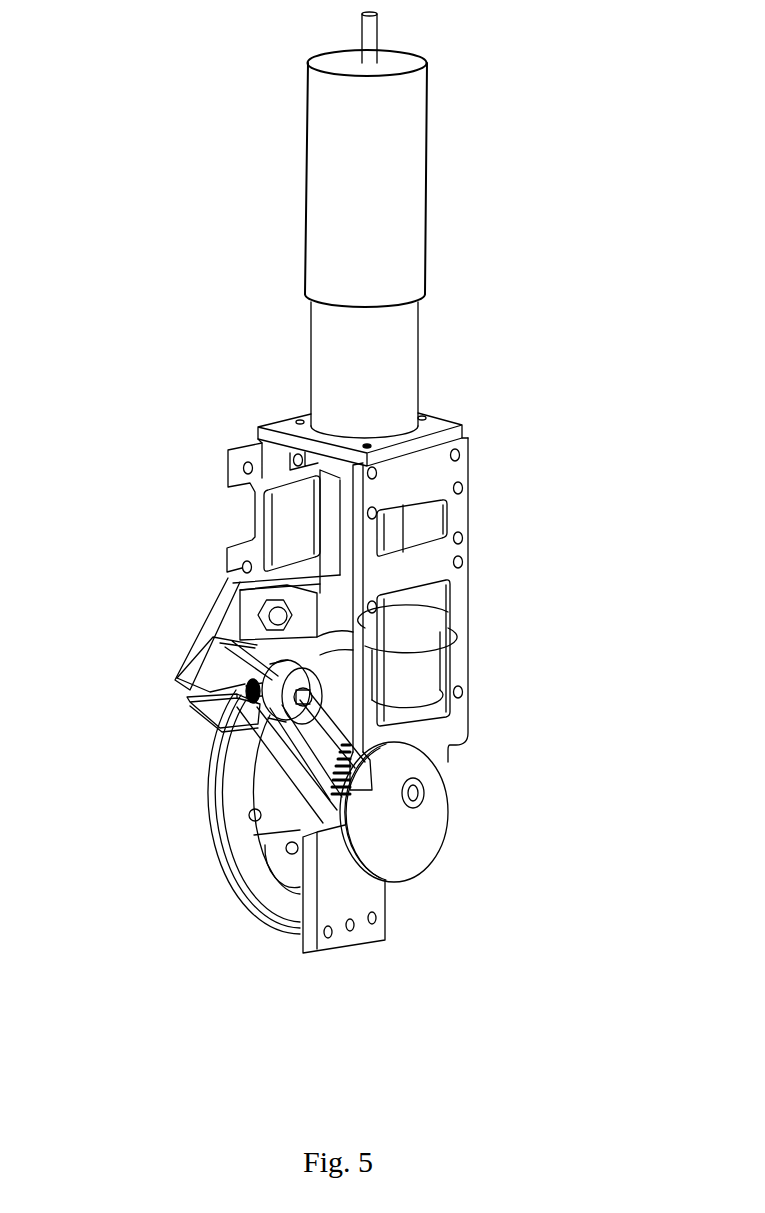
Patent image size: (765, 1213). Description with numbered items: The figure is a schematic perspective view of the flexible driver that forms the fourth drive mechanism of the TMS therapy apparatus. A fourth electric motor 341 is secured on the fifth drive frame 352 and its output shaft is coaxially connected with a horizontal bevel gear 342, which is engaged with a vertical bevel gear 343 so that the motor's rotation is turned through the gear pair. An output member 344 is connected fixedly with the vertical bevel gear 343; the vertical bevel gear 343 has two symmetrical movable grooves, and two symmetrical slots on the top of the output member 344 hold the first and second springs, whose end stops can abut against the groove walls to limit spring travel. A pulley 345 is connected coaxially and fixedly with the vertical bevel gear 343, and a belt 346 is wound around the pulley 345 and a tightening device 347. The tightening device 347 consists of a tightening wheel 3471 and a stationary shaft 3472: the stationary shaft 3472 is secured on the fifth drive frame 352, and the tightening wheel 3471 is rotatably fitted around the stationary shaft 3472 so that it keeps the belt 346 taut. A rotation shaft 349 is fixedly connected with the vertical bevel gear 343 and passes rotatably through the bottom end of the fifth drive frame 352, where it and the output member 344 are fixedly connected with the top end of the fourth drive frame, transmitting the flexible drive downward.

The fourth electric motor 341 is at (317, 258).
The horizontal bevel gear 342 is at (405, 655).
The vertical bevel gear 343 is at (215, 825).
The output member 344 is at (350, 942).
The pulley 345 is at (337, 790).
The belt 346 is at (290, 745).
The tightening device 347 is at (225, 653).
The tightening wheel 3471 is at (222, 717).
The stationary shaft 3472 is at (197, 693).
The rotation shaft 349 is at (413, 793).
The fifth drive frame 352 is at (468, 580).